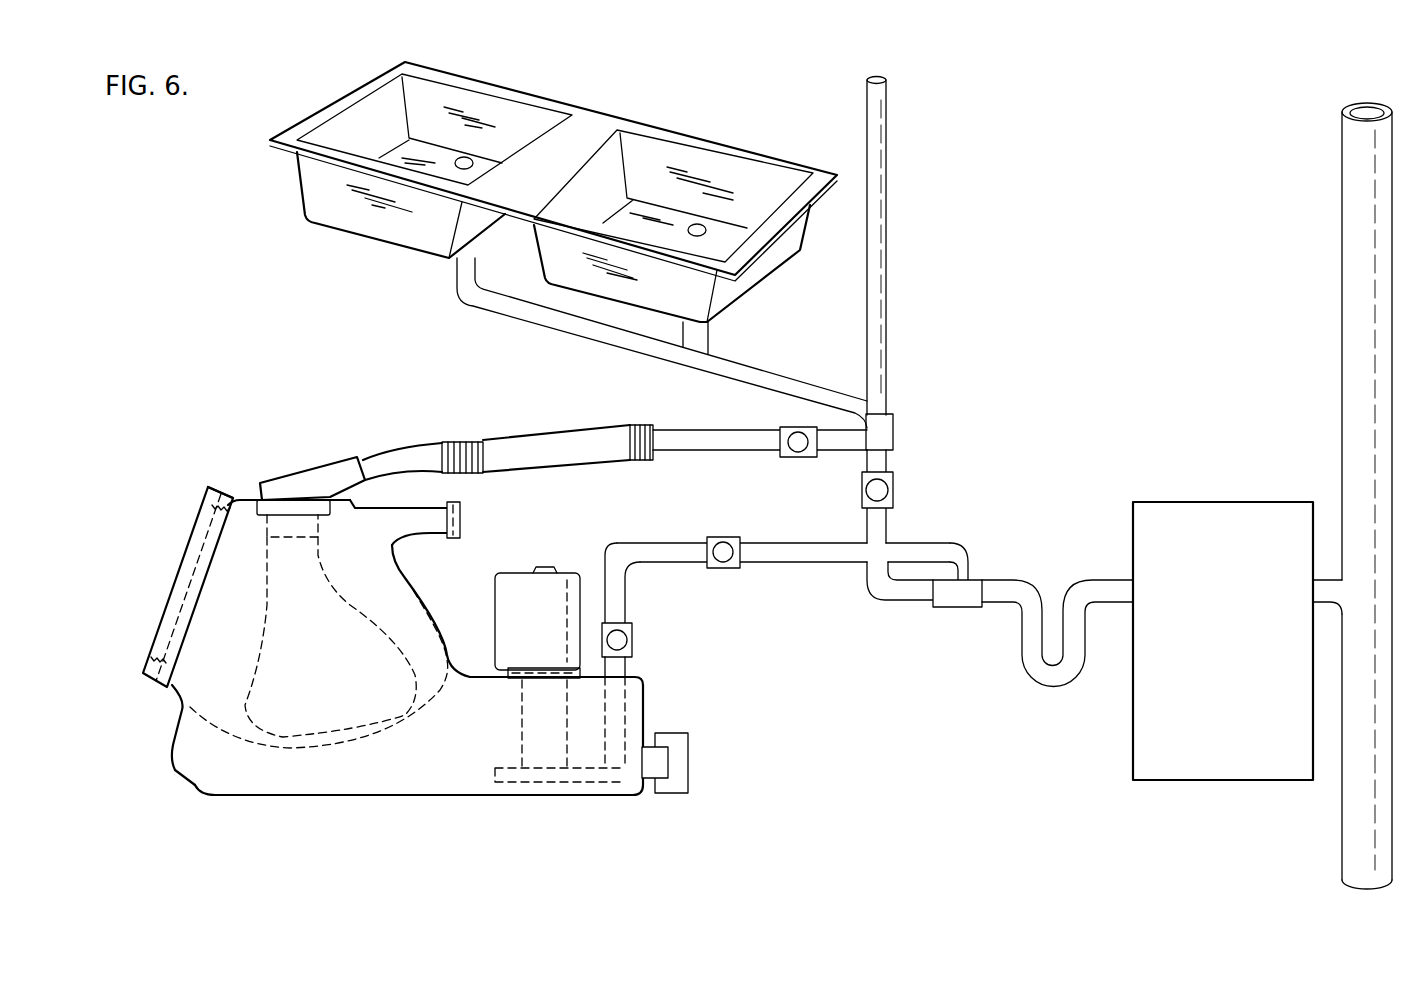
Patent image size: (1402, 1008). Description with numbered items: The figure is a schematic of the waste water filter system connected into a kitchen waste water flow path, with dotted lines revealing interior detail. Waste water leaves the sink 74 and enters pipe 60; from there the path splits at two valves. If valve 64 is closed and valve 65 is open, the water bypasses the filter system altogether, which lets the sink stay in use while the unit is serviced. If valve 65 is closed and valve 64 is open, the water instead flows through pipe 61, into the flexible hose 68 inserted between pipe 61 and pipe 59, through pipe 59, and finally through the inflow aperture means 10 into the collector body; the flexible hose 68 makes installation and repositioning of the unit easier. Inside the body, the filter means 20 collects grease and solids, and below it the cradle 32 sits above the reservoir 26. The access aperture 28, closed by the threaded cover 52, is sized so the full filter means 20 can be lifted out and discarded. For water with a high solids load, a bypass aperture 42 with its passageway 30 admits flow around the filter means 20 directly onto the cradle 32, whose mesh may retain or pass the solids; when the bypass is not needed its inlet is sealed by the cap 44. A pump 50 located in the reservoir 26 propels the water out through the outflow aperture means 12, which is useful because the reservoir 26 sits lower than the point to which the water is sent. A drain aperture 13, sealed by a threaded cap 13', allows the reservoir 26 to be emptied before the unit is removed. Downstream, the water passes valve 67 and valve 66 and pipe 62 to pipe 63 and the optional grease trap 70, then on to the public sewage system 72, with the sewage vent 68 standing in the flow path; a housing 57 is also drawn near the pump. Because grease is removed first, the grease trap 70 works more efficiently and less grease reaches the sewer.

The inflow aperture means 10 is at (303, 480).
The outflow aperture means 12 is at (627, 667).
The drain aperture 13 is at (711, 763).
The threaded cap 13' is at (680, 732).
The filter means 20 is at (273, 628).
The reservoir 26 is at (418, 777).
The access aperture 28 is at (200, 533).
The passageway 30 is at (397, 523).
The cradle 32 is at (177, 737).
The bypass aperture 42 is at (397, 505).
The cap 44 is at (463, 510).
The pump 50 is at (543, 757).
The cover 52 is at (203, 490).
The reservoir 57 is at (577, 580).
The pipe 59 is at (387, 457).
The pipe 60 is at (515, 303).
The pipe 61 is at (680, 440).
The pipe 62 is at (817, 567).
The pipe 63 is at (1003, 603).
The valve 64 is at (790, 458).
The valve 65 is at (887, 497).
The valve 66 is at (723, 570).
The valve 67 is at (632, 633).
The hose 68 is at (887, 185).
The grease trap 70 is at (1152, 670).
The public sewage system 72 is at (1350, 168).
The sink 74 is at (707, 167).